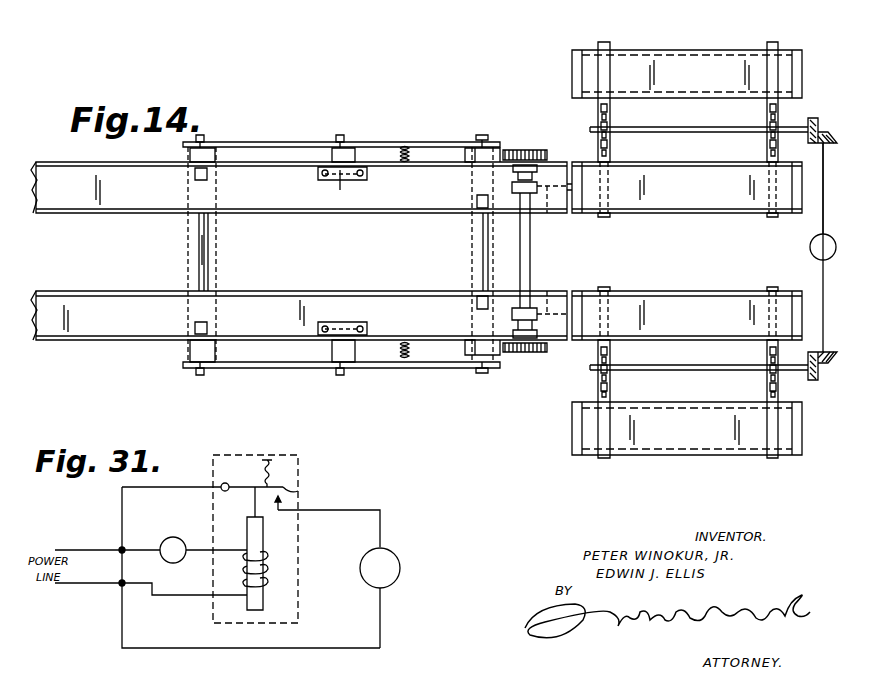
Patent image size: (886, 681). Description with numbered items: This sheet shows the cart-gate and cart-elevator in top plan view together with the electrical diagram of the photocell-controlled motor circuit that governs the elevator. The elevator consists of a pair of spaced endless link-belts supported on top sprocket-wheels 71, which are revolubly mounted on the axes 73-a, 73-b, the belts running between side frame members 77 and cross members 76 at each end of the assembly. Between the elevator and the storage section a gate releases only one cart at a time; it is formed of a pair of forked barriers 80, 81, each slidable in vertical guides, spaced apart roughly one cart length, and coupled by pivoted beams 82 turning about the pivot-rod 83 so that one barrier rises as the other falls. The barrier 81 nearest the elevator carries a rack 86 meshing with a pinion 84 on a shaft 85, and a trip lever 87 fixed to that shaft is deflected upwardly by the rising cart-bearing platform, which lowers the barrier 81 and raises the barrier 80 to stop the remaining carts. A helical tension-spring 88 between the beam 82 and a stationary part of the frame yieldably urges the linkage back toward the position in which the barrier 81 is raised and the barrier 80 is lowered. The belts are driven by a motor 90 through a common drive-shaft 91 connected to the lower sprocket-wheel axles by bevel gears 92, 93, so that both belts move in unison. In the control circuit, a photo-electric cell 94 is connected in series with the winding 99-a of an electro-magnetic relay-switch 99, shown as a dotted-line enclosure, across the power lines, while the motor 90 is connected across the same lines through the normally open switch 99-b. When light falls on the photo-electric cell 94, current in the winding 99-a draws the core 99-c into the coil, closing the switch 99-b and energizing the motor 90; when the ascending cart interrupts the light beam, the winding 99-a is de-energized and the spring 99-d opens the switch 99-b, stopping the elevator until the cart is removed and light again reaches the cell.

In FIG. 14, the top sprocket-wheels 71 is at (610, 108).
In FIG. 14, the top sprocket axis 73-a is at (733, 117).
In FIG. 14, the top sprocket axis 73-b is at (762, 140).
In FIG. 14, the outer cross beam 76 is at (700, 50).
In FIG. 14, the side beam 77 is at (668, 213).
In FIG. 14, the forked barrier 80 is at (196, 174).
In FIG. 14, the forked barrier 81 is at (477, 202).
In FIG. 14, the pivoted beam 82 is at (257, 142).
In FIG. 14, the pivot 83 is at (340, 142).
In FIG. 14, the pinion 84 is at (541, 150).
In FIG. 14, the shaft of pinion 85 is at (532, 252).
In FIG. 14, the rack 86 is at (486, 152).
In FIG. 14, the trip lever 87 is at (547, 213).
In FIG. 14, the spring 88 is at (405, 150).
In FIG. 14, the motor 90 is at (812, 255).
In FIG. 31, the motor 90 is at (399, 560).
In FIG. 14, the common drive-shaft 91 is at (822, 222).
In FIG. 14, the bevel gear 92 is at (826, 135).
In FIG. 14, the bevel gear 93 is at (812, 118).
In FIG. 31, the photo-electric cell 94 is at (168, 537).
In FIG. 31, the electro-magnetic relay-switch 99 is at (300, 531).
In FIG. 31, the winding 99-a is at (266, 573).
In FIG. 31, the normally open switch 99-b is at (298, 493).
In FIG. 31, the core 99-c is at (263, 608).
In FIG. 31, the spring 99-d is at (258, 463).